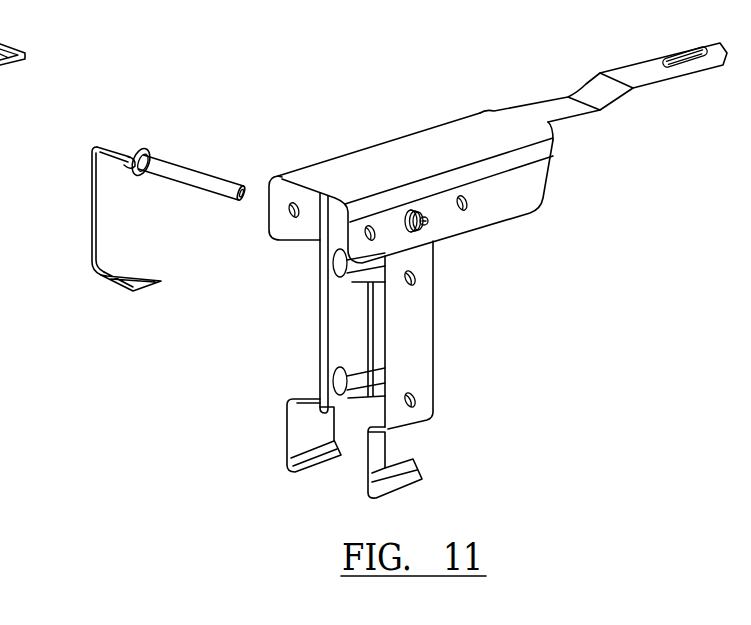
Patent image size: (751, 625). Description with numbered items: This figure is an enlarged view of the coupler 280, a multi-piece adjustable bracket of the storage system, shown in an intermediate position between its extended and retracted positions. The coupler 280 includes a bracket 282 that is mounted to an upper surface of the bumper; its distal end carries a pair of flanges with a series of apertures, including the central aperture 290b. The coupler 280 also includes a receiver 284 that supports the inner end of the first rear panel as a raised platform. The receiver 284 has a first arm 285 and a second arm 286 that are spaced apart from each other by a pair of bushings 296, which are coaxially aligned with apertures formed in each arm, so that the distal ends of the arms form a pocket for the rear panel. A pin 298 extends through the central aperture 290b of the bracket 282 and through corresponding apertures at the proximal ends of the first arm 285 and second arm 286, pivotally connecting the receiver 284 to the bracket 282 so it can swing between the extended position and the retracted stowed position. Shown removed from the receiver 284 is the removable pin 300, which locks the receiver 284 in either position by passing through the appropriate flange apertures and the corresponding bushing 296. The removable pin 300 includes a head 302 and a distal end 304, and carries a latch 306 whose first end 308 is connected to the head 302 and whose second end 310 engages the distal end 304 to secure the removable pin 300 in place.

The coupler 280 is at (364, 71).
The bracket 282 is at (537, 95).
The receiver 284 is at (427, 458).
The first arm 285 is at (276, 441).
The second arm 286 is at (442, 347).
The central aperture 290b is at (418, 210).
The bushings 296 is at (356, 365).
The pin 298 is at (427, 223).
The removable pin 300 is at (197, 163).
The head 302 is at (146, 149).
The distal end 304 is at (240, 198).
The latch 306 is at (74, 227).
The first end 308 is at (128, 155).
The second end 310 is at (137, 293).